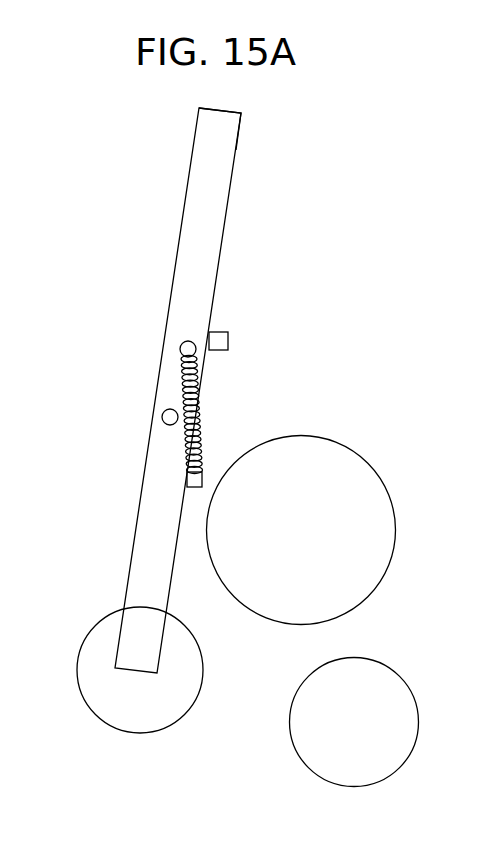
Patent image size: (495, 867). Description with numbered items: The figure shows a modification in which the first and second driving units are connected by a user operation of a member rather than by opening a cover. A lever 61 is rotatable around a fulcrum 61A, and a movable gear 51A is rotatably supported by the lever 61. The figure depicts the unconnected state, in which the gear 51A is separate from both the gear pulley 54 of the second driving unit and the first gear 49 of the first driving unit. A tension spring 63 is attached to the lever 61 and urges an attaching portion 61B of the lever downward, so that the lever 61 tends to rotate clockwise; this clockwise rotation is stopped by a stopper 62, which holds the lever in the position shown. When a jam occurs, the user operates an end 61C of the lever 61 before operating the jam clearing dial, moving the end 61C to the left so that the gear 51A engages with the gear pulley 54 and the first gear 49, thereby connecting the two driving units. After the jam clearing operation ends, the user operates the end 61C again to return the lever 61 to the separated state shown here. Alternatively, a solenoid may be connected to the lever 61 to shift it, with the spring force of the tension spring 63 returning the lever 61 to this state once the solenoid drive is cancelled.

The lever 61 is at (143, 485).
The fulcrum 61A is at (162, 417).
The attaching portion 61B is at (180, 349).
The end of lever 61C is at (230, 133).
The stopper 62 is at (229, 341).
The tension spring 63 is at (201, 425).
The gear pulley 54 is at (382, 527).
The movable gear 51A is at (183, 676).
The first gear 49 is at (400, 726).